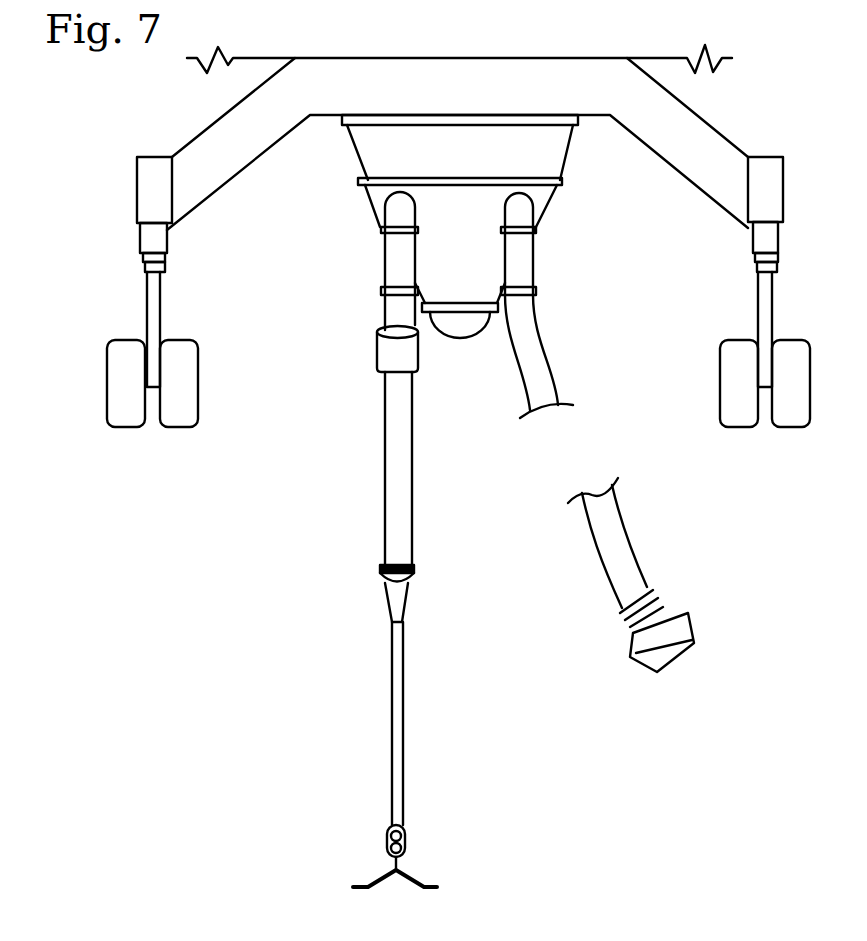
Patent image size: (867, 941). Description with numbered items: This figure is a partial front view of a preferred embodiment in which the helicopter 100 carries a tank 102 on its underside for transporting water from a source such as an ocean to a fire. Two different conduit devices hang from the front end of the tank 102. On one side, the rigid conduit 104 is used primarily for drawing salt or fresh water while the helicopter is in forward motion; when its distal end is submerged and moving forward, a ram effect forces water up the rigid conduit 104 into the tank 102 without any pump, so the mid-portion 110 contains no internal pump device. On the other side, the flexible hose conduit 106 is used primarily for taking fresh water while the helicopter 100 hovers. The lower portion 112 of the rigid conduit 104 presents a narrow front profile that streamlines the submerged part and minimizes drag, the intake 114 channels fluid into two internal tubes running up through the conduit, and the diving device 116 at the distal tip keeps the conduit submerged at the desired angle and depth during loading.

The helicopter 100 is at (720, 147).
The tank 102 is at (538, 205).
The rigid conduit 104 is at (392, 385).
The flexible hose conduit 106 is at (618, 548).
The mid-portion 110 is at (383, 575).
The lower portion 112 is at (387, 705).
The intake 114 is at (387, 838).
The diving device 116 is at (407, 878).